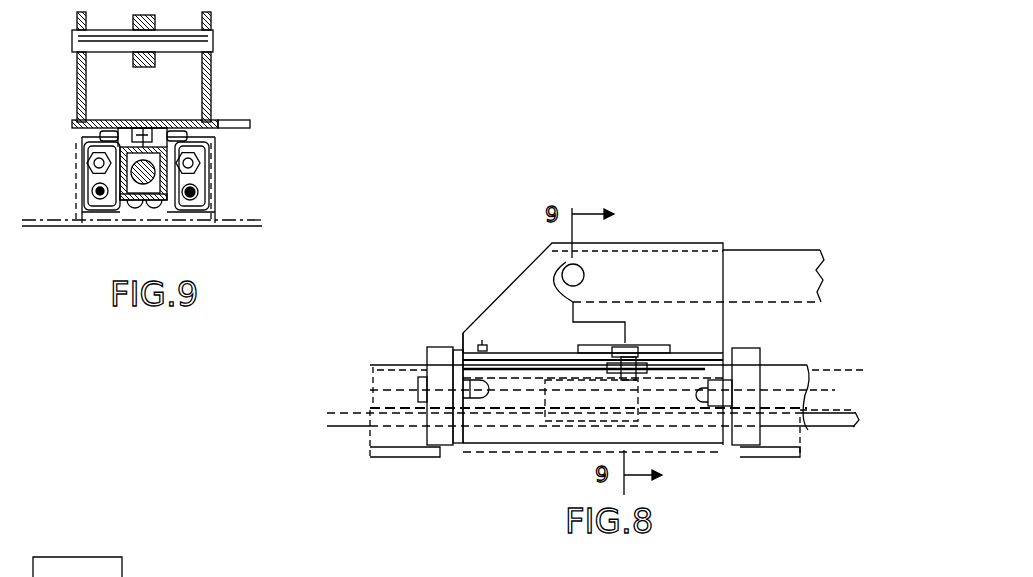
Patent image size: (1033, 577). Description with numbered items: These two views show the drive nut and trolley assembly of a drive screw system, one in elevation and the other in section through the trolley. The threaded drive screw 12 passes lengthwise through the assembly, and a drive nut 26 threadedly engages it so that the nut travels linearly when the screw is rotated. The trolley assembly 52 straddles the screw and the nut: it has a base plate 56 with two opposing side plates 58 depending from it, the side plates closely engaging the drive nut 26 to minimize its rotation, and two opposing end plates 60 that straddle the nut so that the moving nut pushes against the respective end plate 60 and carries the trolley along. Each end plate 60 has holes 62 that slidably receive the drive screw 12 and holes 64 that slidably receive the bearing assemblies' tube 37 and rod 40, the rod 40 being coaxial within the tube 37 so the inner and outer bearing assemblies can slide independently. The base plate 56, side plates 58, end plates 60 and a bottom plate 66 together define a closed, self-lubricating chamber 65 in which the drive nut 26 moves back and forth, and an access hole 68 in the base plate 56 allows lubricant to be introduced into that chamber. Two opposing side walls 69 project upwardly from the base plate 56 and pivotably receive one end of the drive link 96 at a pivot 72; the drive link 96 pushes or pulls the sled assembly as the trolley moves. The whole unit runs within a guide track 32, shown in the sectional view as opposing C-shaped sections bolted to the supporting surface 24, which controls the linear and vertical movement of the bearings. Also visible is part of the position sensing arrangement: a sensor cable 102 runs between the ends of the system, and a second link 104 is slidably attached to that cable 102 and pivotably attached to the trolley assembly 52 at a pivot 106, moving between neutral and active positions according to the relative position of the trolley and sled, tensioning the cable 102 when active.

In FIG. 9, the drive screw 12 is at (127, 162).
In FIG. 8, the drive screw 12 is at (362, 398).
In FIG. 9, the supporting surface 24 is at (263, 221).
In FIG. 9, the drive nut 26 is at (150, 172).
In FIG. 8, the drive nut 26 is at (547, 447).
In FIG. 9, the guide track 32 is at (78, 192).
In FIG. 9, the rigid tubes 37 is at (93, 198).
In FIG. 8, the rigid tubes 37 is at (400, 447).
In FIG. 9, the rods 40 is at (100, 199).
In FIG. 8, the rods 40 is at (327, 415).
In FIG. 9, the trolley assembly 52 is at (306, 26).
In FIG. 8, the trolley assembly 52 is at (441, 314).
In FIG. 9, the base plate 56 is at (225, 124).
In FIG. 8, the base plate 56 is at (710, 350).
In FIG. 9, the side plates 58 is at (116, 140).
In FIG. 8, the end plates 60 is at (440, 446).
In FIG. 9, the holes 62 is at (190, 163).
In FIG. 8, the holes 62 is at (433, 344).
In FIG. 9, the holes 64 is at (170, 210).
In FIG. 9, the chamber 65 is at (195, 122).
In FIG. 8, the chamber 65 is at (530, 382).
In FIG. 9, the bottom plate 66 is at (128, 210).
In FIG. 8, the bottom plate 66 is at (585, 443).
In FIG. 8, the access hole 68 is at (481, 343).
In FIG. 9, the side walls 69 is at (85, 22).
In FIG. 8, the side walls 69 is at (680, 243).
In FIG. 9, the pivot 72 is at (213, 40).
In FIG. 8, the pivot 72 is at (562, 271).
In FIG. 9, the drive link 96 is at (150, 67).
In FIG. 8, the drive link 96 is at (790, 250).
In FIG. 8, the cable 102 is at (343, 372).
In FIG. 9, the second link 104 is at (217, 121).
In FIG. 8, the second link 104 is at (592, 344).
In FIG. 9, the pivot 106 is at (147, 120).
In FIG. 8, the pivot 106 is at (636, 347).